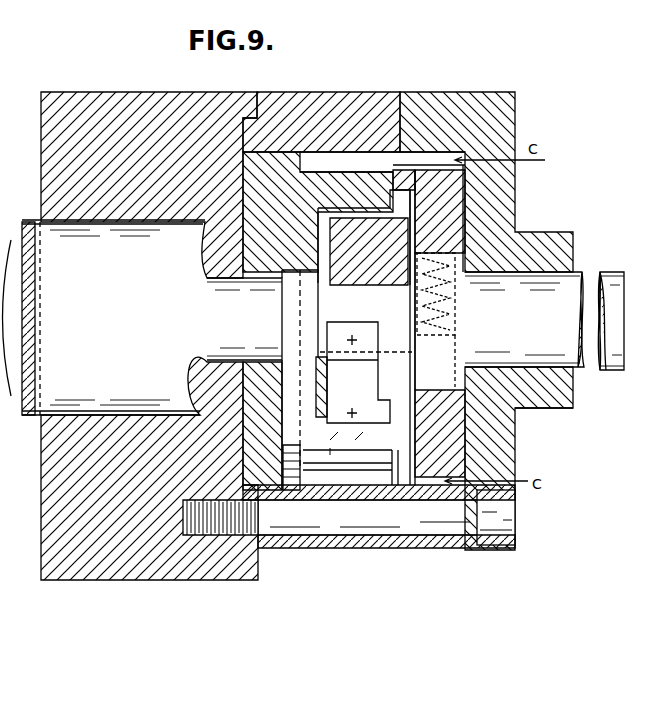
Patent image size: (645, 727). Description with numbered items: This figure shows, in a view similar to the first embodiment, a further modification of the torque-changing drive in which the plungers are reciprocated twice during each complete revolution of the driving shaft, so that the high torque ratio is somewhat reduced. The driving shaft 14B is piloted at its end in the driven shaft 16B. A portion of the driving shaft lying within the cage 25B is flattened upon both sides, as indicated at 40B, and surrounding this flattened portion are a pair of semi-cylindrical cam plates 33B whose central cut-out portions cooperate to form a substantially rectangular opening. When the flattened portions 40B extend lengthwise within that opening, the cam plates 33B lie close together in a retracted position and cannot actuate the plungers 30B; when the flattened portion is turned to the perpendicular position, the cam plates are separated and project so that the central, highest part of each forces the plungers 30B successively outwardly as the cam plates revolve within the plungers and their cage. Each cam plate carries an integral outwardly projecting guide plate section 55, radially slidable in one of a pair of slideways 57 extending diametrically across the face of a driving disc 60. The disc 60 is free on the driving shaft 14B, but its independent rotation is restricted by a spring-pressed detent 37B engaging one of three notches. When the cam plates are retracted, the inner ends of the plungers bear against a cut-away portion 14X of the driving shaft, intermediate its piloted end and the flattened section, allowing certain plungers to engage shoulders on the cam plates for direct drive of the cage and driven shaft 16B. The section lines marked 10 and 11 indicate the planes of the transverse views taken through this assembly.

The driven shaft 16B is at (40, 222).
The driving shaft 14B is at (612, 272).
The portion of the driving shaft 14X is at (288, 328).
The cage 25B is at (360, 195).
The guide plate section 55 is at (400, 195).
The slideways 57 is at (443, 180).
The driving disc 60 is at (452, 170).
The semi-cylindrical cam plates 33B is at (410, 223).
The flattened portion of the driving shaft 40B is at (390, 322).
The spring-pressed detent 37B is at (520, 415).
The plungers 30B is at (343, 433).
The section line 10 is at (390, 63).
The section line 11 is at (360, 24).